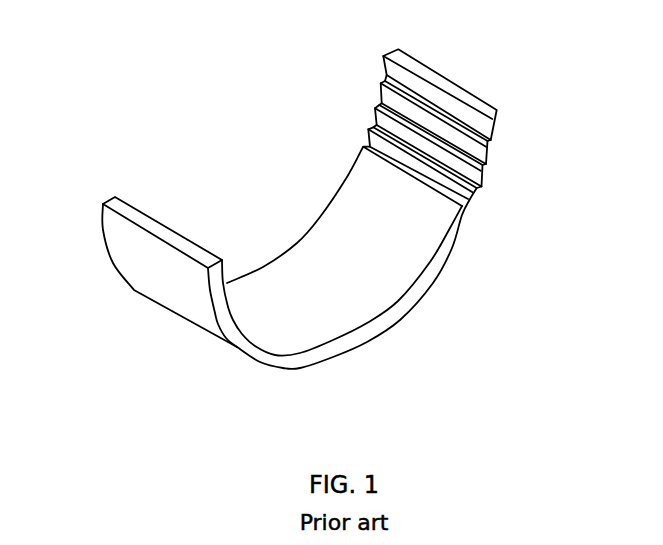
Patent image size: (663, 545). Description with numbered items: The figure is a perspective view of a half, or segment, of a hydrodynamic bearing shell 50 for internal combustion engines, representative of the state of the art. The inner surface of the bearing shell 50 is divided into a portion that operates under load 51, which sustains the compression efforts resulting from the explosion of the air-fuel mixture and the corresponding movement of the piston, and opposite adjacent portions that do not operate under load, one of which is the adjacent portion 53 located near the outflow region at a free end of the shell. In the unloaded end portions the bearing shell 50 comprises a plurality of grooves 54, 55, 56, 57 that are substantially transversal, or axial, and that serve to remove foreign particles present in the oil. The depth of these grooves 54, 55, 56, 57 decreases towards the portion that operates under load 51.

The hydrodynamic bearing shell 50 is at (158, 90).
The portion that operates under load 51 is at (358, 290).
The adjacent portion not operating under load 53 is at (158, 220).
The groove 54 is at (493, 138).
The groove 55 is at (486, 167).
The groove 56 is at (482, 190).
The groove 57 is at (473, 208).